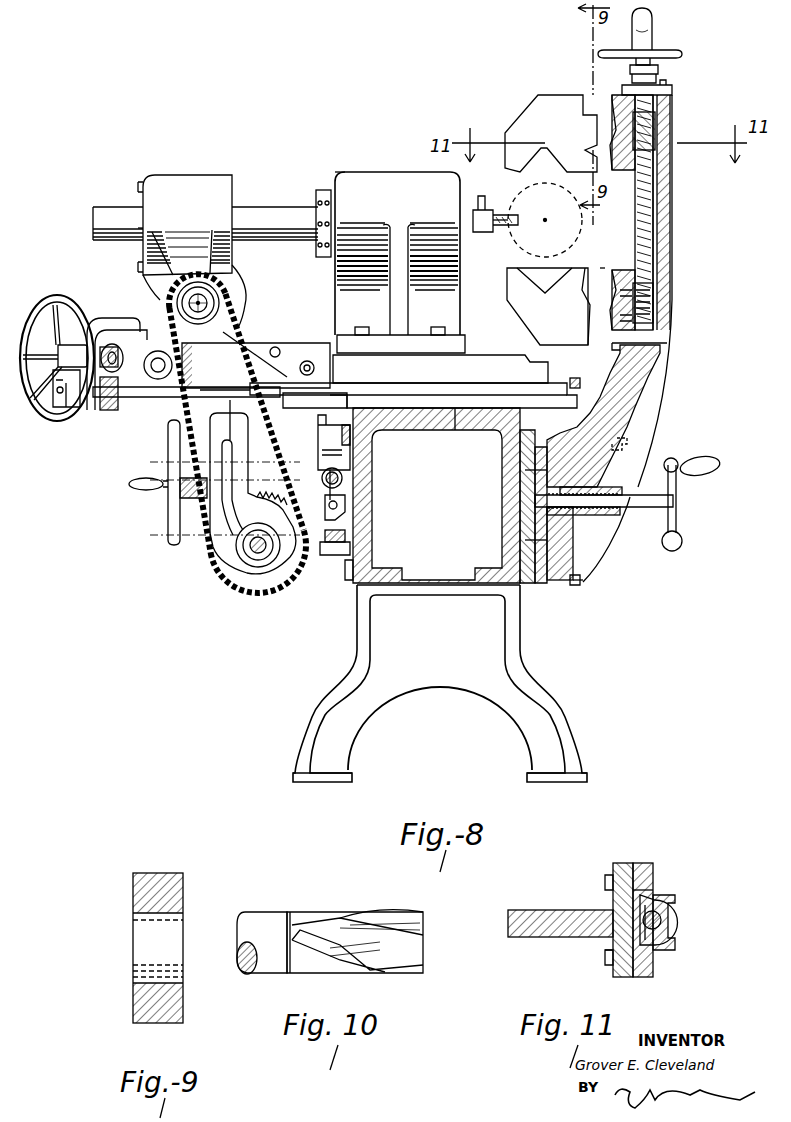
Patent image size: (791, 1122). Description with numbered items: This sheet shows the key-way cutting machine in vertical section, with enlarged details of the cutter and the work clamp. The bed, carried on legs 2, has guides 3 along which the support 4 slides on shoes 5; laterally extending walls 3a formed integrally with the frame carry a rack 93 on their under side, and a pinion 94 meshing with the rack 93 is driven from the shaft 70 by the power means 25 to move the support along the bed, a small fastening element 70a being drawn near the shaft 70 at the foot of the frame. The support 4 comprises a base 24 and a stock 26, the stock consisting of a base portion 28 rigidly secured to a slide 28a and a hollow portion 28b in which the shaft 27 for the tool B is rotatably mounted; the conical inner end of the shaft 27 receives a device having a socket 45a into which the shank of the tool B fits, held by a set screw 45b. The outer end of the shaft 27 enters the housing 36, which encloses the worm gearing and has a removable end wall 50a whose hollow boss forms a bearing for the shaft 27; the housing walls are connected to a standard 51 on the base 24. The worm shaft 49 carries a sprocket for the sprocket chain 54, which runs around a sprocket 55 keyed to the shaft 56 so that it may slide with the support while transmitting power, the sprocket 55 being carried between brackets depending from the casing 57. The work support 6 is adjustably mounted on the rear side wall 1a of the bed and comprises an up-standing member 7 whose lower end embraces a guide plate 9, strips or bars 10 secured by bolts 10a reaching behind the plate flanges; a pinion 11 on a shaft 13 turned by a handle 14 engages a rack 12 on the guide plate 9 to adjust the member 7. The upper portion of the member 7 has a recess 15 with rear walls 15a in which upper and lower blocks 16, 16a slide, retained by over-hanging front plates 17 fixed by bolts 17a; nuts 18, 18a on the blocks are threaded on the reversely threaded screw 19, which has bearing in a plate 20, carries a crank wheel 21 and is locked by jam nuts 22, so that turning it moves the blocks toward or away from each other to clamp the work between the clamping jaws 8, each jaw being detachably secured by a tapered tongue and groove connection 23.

In FIG. 8, the rear side wall 1a is at (538, 490).
In FIG. 8, the legs 2 is at (568, 703).
In FIG. 8, the guides 3 is at (360, 420).
In FIG. 8, the laterally extending walls 3a is at (315, 403).
In FIG. 8, the support 4 is at (483, 329).
In FIG. 8, the shoes 5 is at (330, 392).
In FIG. 8, the support for the work 6 is at (647, 338).
In FIG. 8, the up-standing member 7 is at (655, 380).
In FIG. 11, the up-standing member 7 is at (670, 890).
In FIG. 8, the clamping jaws 8 is at (535, 118).
In FIG. 11, the clamping jaws 8 is at (540, 910).
In FIG. 8, the guide plate 9 is at (538, 535).
In FIG. 8, the strips or bars 10 is at (525, 450).
In FIG. 8, the bolts 10a is at (627, 443).
In FIG. 8, the pinion 11 is at (535, 507).
In FIG. 8, the rack 12 is at (573, 540).
In FIG. 8, the shaft 13 is at (650, 507).
In FIG. 8, the handle 14 is at (680, 528).
In FIG. 8, the recess 15 is at (660, 170).
In FIG. 11, the recess 15 is at (672, 913).
In FIG. 11, the rear walls 15a is at (655, 880).
In FIG. 8, the upper block 16 is at (587, 133).
In FIG. 11, the upper block 16 is at (612, 918).
In FIG. 8, the lower block 16a is at (605, 300).
In FIG. 11, the front plates 17 is at (622, 862).
In FIG. 11, the bolts 17a is at (605, 958).
In FIG. 8, the nut 18 is at (650, 125).
In FIG. 11, the nut 18 is at (665, 930).
In FIG. 8, the nut 18a is at (655, 300).
In FIG. 8, the screw 19 is at (650, 238).
In FIG. 11, the screw 19 is at (655, 975).
In FIG. 8, the plate 20 is at (670, 90).
In FIG. 8, the crank wheel 21 is at (668, 48).
In FIG. 8, the jam nuts 22 is at (630, 72).
In FIG. 8, the tongue and groove connection 23 is at (585, 290).
In FIG. 9, the tongue and groove connection 23 is at (185, 918).
In FIG. 8, the base 24 is at (450, 415).
In FIG. 8, the power means 25 is at (318, 430).
In FIG. 8, the stock 26 is at (388, 253).
In FIG. 8, the shaft 27 is at (282, 192).
In FIG. 8, the base portion 28 is at (350, 348).
In FIG. 8, the slide 28a is at (490, 378).
In FIG. 8, the hollow portion 28b is at (345, 178).
In FIG. 8, the housing 36 is at (196, 155).
In FIG. 8, the socket 45a is at (510, 215).
In FIG. 8, the set screw 45b is at (480, 195).
In FIG. 8, the shaft 49 is at (205, 305).
In FIG. 8, the end wall 50a is at (143, 250).
In FIG. 8, the standard 51 is at (215, 345).
In FIG. 8, the sprocket chain 54 is at (185, 398).
In FIG. 8, the sprocket 55 is at (245, 580).
In FIG. 8, the shaft 56 is at (262, 552).
In FIG. 8, the casing 57 is at (214, 487).
In FIG. 8, the shaft 70 is at (348, 497).
In FIG. 8, the clamp stop 70a is at (582, 580).
In FIG. 8, the rack 93 is at (307, 471).
In FIG. 8, the pinion 94 is at (352, 470).
In FIG. 8, the tool B is at (503, 240).
In FIG. 10, the tool B is at (410, 910).